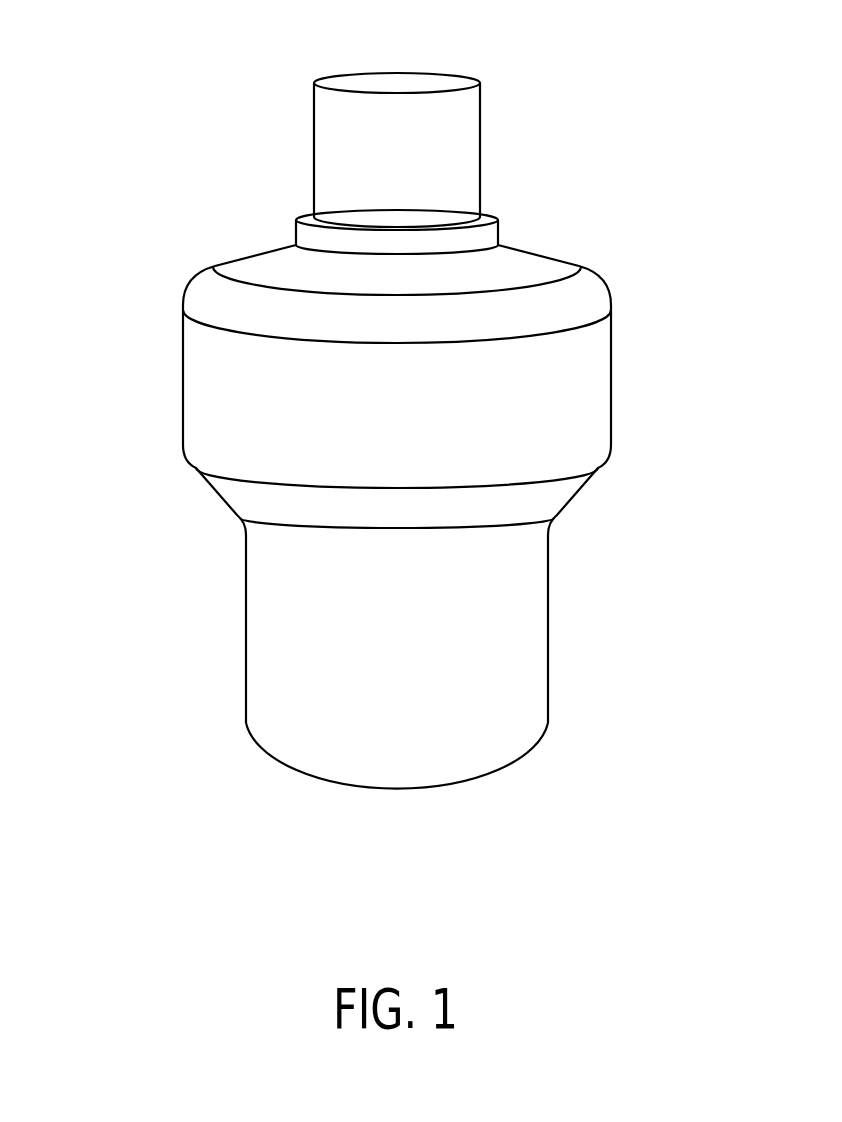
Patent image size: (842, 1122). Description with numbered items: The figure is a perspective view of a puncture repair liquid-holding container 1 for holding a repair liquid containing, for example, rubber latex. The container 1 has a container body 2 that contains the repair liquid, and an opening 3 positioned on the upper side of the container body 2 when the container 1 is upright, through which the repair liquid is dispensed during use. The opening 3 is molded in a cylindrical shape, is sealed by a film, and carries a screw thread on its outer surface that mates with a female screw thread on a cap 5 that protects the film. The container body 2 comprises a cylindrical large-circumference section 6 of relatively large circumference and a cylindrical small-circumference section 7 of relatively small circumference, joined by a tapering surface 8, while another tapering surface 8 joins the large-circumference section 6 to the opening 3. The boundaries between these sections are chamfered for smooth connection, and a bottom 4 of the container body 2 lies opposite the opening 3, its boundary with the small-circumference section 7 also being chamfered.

The puncture repair liquid-holding container 1 is at (397, 458).
The container body 2 is at (648, 474).
The opening 3 is at (483, 210).
The bottom 4 is at (412, 797).
The cap 5 is at (314, 132).
The large-circumference section 6 is at (203, 412).
The small-circumference section 7 is at (268, 702).
The tapering surface 8 is at (270, 267).